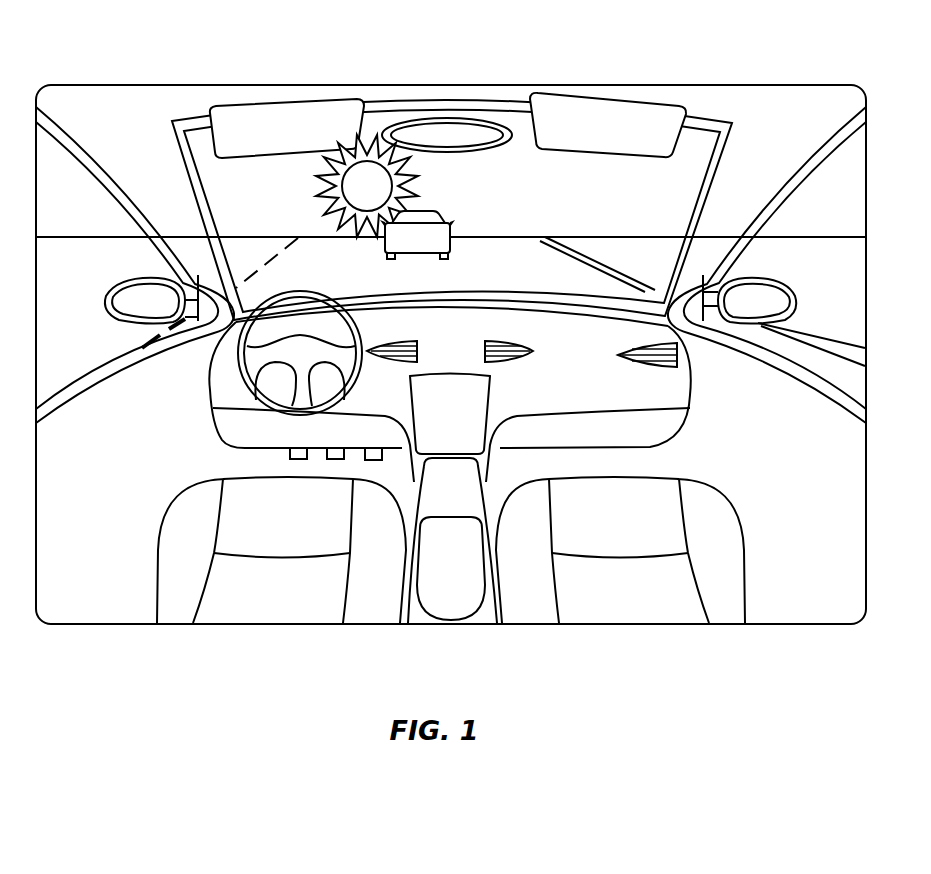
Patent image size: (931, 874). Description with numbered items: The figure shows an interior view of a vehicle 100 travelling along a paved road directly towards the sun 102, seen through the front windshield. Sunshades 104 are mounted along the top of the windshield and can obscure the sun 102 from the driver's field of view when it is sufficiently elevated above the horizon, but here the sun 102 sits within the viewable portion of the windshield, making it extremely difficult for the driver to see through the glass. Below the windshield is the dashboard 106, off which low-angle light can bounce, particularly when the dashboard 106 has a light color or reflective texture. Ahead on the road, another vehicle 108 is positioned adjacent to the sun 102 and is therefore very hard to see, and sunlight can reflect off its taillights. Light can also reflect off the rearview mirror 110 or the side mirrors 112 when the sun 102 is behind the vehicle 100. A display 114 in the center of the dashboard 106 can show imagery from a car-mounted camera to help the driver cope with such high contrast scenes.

The vehicle 100 is at (88, 58).
The sun 102 is at (350, 195).
The sunshades 104 is at (263, 143).
The dashboard 106 is at (431, 332).
The vehicle 108 is at (401, 243).
The mirror 110 is at (428, 145).
The mirrors 112 is at (111, 322).
The display 114 is at (431, 426).